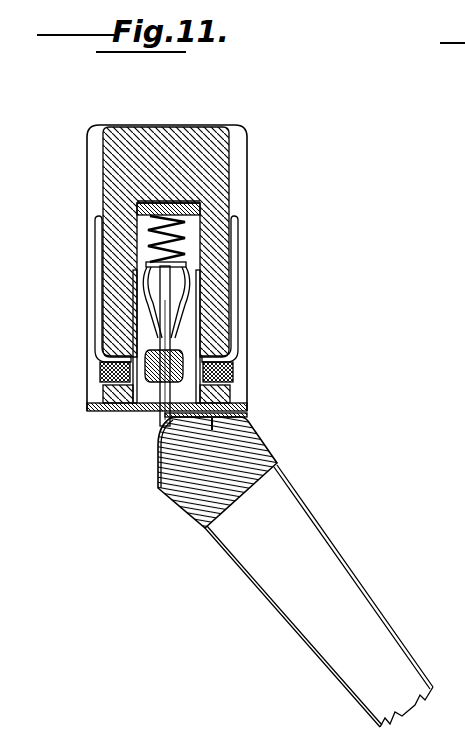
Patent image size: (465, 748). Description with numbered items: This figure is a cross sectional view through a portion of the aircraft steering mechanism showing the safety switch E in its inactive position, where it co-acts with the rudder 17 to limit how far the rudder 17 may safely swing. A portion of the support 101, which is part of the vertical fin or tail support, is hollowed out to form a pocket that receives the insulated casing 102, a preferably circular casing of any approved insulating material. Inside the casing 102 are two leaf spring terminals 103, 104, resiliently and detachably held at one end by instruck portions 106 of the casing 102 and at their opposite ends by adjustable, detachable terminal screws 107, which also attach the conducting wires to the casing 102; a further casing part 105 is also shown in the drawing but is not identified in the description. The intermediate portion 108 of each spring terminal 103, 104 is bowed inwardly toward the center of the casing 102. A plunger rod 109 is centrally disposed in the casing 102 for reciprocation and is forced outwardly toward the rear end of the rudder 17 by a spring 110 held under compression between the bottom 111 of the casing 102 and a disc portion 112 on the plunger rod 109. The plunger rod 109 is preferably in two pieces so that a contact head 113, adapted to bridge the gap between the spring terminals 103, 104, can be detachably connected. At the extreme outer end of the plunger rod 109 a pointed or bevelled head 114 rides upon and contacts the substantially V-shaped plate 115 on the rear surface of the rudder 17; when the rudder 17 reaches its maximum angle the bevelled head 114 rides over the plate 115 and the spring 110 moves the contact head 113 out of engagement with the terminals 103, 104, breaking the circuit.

The safety switch E is at (205, 162).
The rudder 17 is at (263, 506).
The support 101 is at (130, 172).
The insulated casing 102 is at (194, 235).
The leaf spring terminal 103 is at (186, 304).
The leaf spring terminal 104 is at (137, 295).
The bushing 105 is at (226, 348).
The instruck portions 106 is at (238, 258).
The terminal screw 107 is at (230, 383).
The intermediate portion 108 is at (213, 328).
The plunger rod 109 is at (158, 417).
The spring 110 is at (215, 205).
The bottom 111 is at (157, 207).
The disc portion 112 is at (190, 266).
The contact head 113 is at (144, 414).
The bevelled head 114 is at (163, 419).
The V-shaped plate 115 is at (163, 436).